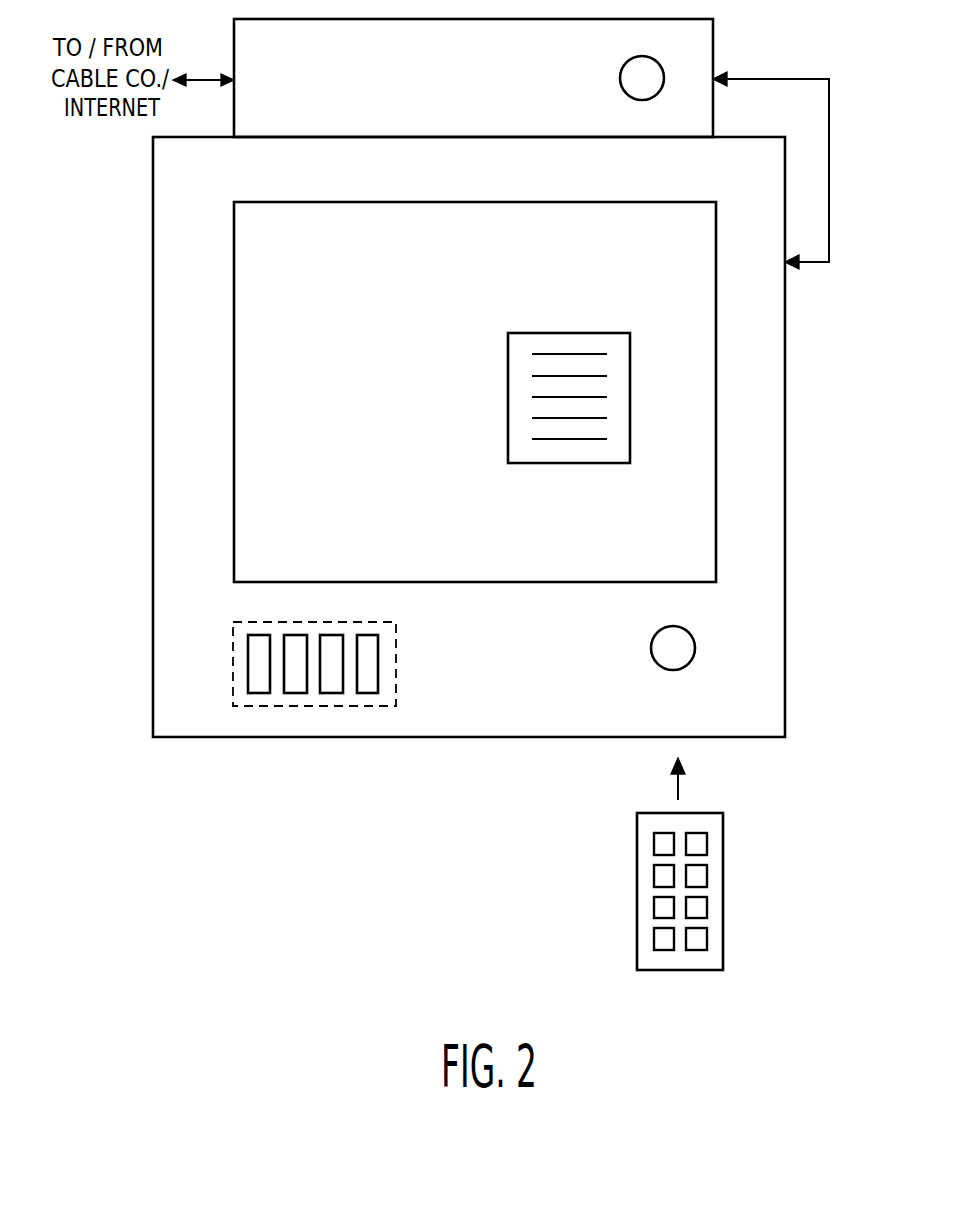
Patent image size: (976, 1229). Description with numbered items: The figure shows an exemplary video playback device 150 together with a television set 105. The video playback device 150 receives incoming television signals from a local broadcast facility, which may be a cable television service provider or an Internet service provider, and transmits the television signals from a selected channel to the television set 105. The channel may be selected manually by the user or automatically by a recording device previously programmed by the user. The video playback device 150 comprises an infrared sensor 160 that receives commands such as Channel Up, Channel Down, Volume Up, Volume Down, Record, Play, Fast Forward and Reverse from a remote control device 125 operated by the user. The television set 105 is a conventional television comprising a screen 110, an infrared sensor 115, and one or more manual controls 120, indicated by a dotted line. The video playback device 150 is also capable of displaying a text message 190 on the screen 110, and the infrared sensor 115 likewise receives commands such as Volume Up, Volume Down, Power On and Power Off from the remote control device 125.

The television set 105 is at (198, 177).
The screen 110 is at (283, 245).
The infrared (IR) sensor 115 is at (651, 649).
The manual controls 120 is at (238, 664).
The remote control device 125 is at (640, 869).
The video playback device 150 is at (280, 62).
The infrared (IR) sensor 160 is at (620, 80).
The text message 190 is at (574, 340).